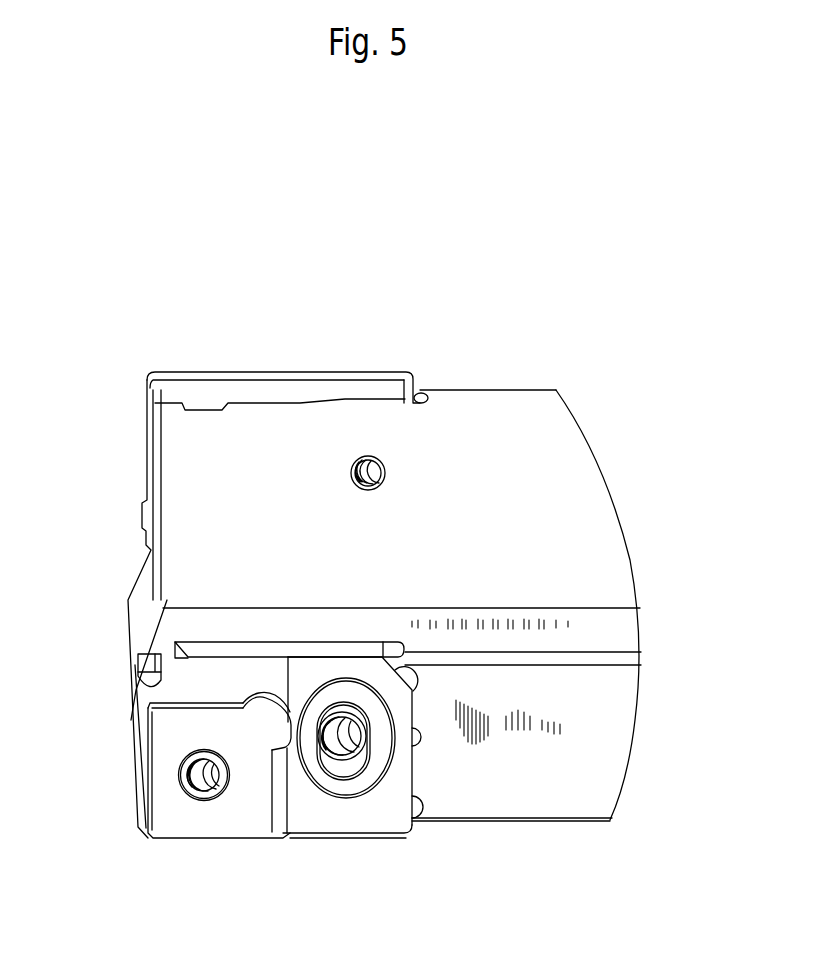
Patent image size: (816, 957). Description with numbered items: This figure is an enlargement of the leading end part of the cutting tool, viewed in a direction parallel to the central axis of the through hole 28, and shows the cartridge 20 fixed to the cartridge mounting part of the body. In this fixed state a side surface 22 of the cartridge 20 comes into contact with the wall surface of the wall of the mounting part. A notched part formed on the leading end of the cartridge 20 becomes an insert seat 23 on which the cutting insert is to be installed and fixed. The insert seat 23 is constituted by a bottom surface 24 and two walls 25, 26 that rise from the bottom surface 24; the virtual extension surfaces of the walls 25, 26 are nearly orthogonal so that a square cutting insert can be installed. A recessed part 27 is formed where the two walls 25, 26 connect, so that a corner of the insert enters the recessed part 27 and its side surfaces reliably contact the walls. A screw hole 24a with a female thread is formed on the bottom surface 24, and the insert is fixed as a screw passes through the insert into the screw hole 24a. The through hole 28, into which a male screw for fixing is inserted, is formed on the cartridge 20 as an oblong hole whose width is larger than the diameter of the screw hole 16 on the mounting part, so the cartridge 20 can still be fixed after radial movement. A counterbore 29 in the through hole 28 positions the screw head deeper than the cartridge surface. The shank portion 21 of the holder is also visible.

The screw hole 16 is at (339, 715).
The cartridge 20 is at (243, 670).
The shank 21 is at (288, 673).
The side surface 22 is at (412, 742).
The insert seat 23 is at (183, 840).
The bottom surface 24 is at (158, 803).
The screw hole 24a is at (197, 782).
The wall 25 is at (200, 703).
The wall 26 is at (275, 808).
The recessed part 27 is at (257, 713).
The through hole 28 is at (367, 770).
The counterbore 29 is at (341, 790).